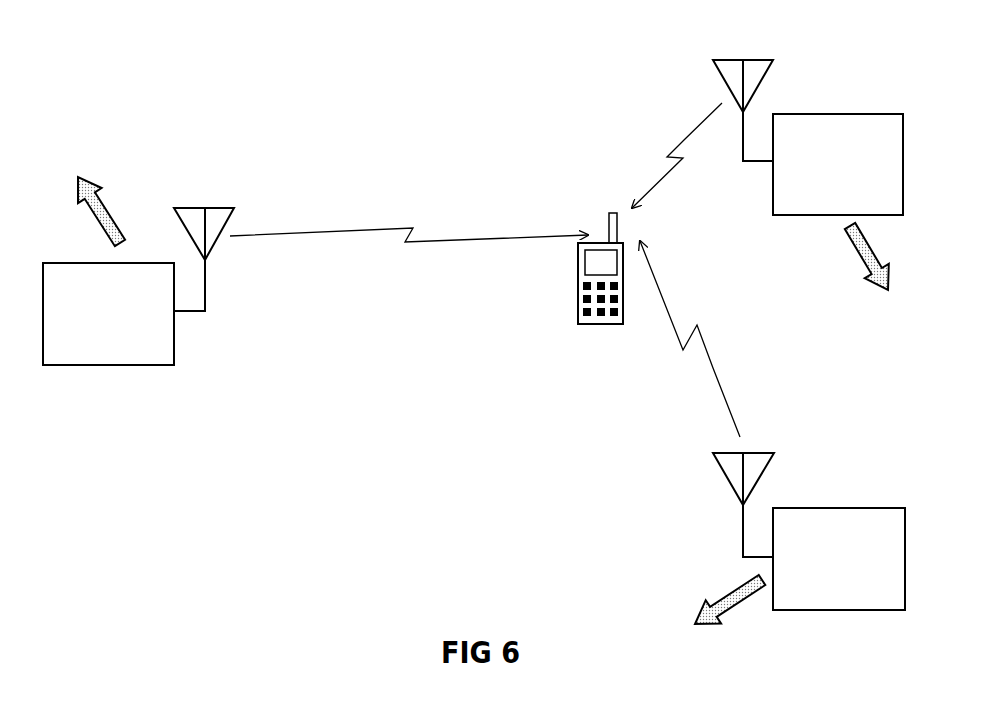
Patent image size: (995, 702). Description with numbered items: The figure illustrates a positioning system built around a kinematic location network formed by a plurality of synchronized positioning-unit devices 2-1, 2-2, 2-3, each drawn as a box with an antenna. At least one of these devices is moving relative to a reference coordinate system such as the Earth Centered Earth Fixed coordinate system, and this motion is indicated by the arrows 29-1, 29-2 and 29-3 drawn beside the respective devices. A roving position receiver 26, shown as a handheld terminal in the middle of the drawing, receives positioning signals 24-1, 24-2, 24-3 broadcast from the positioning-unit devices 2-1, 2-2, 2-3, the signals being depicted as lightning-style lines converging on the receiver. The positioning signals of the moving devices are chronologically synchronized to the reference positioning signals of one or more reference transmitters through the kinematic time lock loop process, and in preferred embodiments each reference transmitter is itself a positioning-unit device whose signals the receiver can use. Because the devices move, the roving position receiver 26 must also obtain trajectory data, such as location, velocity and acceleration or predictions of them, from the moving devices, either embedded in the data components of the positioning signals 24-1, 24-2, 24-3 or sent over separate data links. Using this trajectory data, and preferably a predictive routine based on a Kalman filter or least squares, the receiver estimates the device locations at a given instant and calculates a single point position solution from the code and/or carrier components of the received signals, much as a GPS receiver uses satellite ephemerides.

The positioning-unit device 2-1 is at (866, 114).
The positioning-unit device 2-2 is at (868, 508).
The positioning-unit device 2-3 is at (110, 367).
The positioning signal 24-1 is at (683, 138).
The positioning signal 24-2 is at (713, 368).
The positioning signal 24-3 is at (433, 242).
The roving position receiver 26 is at (578, 278).
The arrow 29-1 is at (862, 268).
The arrow 29-2 is at (697, 615).
The arrow 29-3 is at (90, 177).